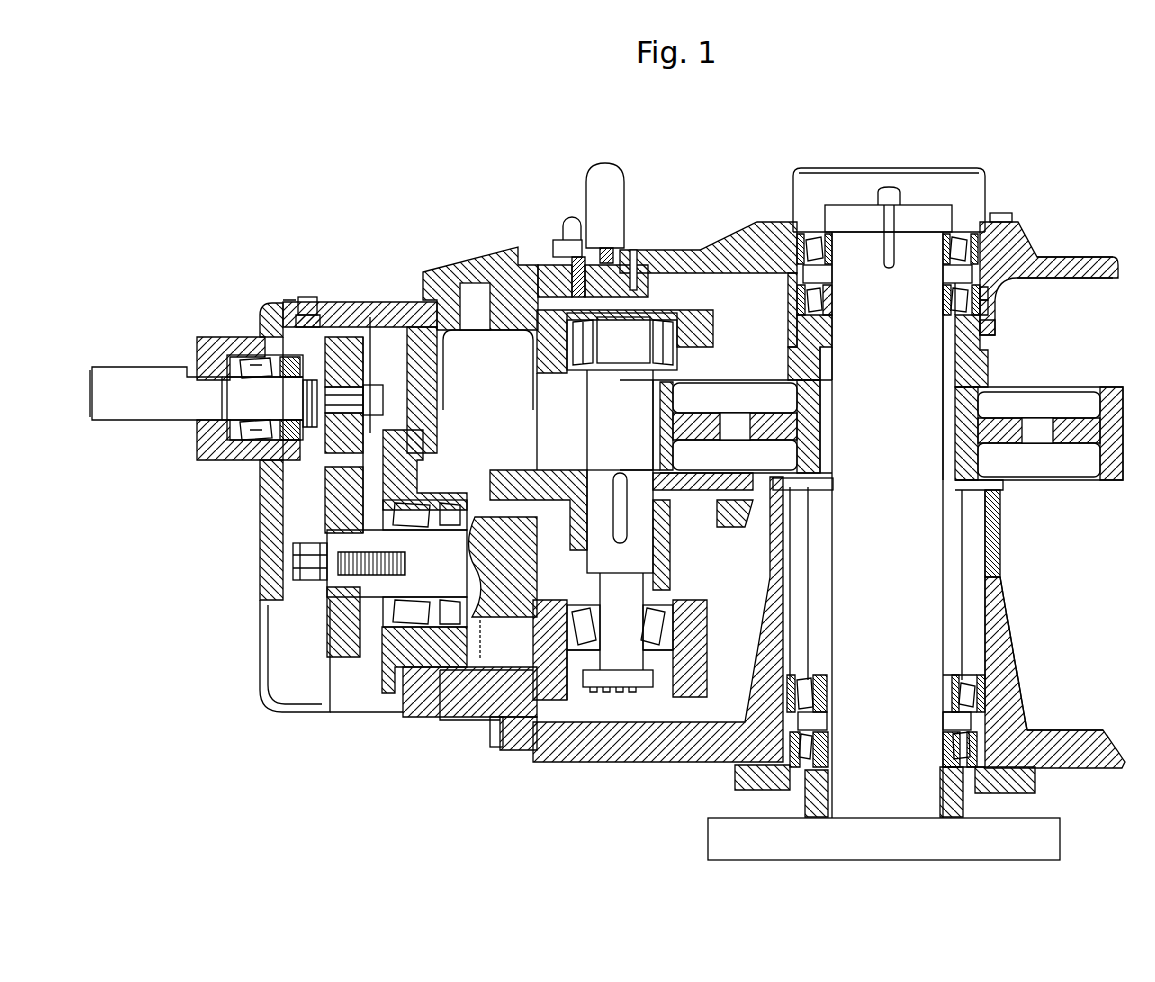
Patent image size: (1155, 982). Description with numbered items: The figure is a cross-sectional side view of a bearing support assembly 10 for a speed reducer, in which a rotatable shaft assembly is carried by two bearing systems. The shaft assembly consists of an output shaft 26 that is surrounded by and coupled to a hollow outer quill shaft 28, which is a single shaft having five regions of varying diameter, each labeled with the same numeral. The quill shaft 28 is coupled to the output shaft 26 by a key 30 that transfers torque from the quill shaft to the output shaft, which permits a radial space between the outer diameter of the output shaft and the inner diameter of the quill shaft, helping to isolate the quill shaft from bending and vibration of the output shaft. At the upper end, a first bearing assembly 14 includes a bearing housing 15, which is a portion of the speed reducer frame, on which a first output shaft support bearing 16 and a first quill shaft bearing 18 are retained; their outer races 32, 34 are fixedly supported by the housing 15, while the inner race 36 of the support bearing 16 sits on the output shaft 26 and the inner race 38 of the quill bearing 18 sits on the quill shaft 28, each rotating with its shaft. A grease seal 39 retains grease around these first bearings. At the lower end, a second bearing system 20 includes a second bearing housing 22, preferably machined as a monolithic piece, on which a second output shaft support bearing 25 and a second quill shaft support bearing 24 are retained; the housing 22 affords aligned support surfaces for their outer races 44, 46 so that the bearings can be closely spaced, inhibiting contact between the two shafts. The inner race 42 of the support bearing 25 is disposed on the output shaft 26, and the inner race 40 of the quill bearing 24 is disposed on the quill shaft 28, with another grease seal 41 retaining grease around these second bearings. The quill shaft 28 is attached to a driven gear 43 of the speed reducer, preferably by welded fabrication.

The bearing support assembly 10 is at (1055, 191).
The first bearing assembly 14 is at (1036, 293).
The bearing housing 15 is at (1013, 260).
The first output shaft support bearing 16 is at (947, 260).
The first quill shaft bearing 18 is at (983, 307).
The second bearing system 20 is at (1078, 688).
The second bearing housing 22 is at (1043, 795).
The second quill shaft support bearing 24 is at (952, 700).
The second output shaft support bearing 25 is at (953, 743).
The output shaft 26 is at (887, 611).
The quill shaft 28 is at (950, 367).
The key 30 is at (838, 315).
The outer race 32 is at (1012, 234).
The outer race 34 is at (985, 297).
The inner race 36 is at (947, 247).
The inner race 38 is at (957, 315).
The grease seal 39 is at (990, 336).
The inner race 40 is at (948, 682).
The grease seal 41 is at (800, 785).
The inner race 42 is at (947, 757).
The driven gear 43 is at (733, 410).
The outer race 44 is at (1017, 717).
The outer race 46 is at (983, 692).